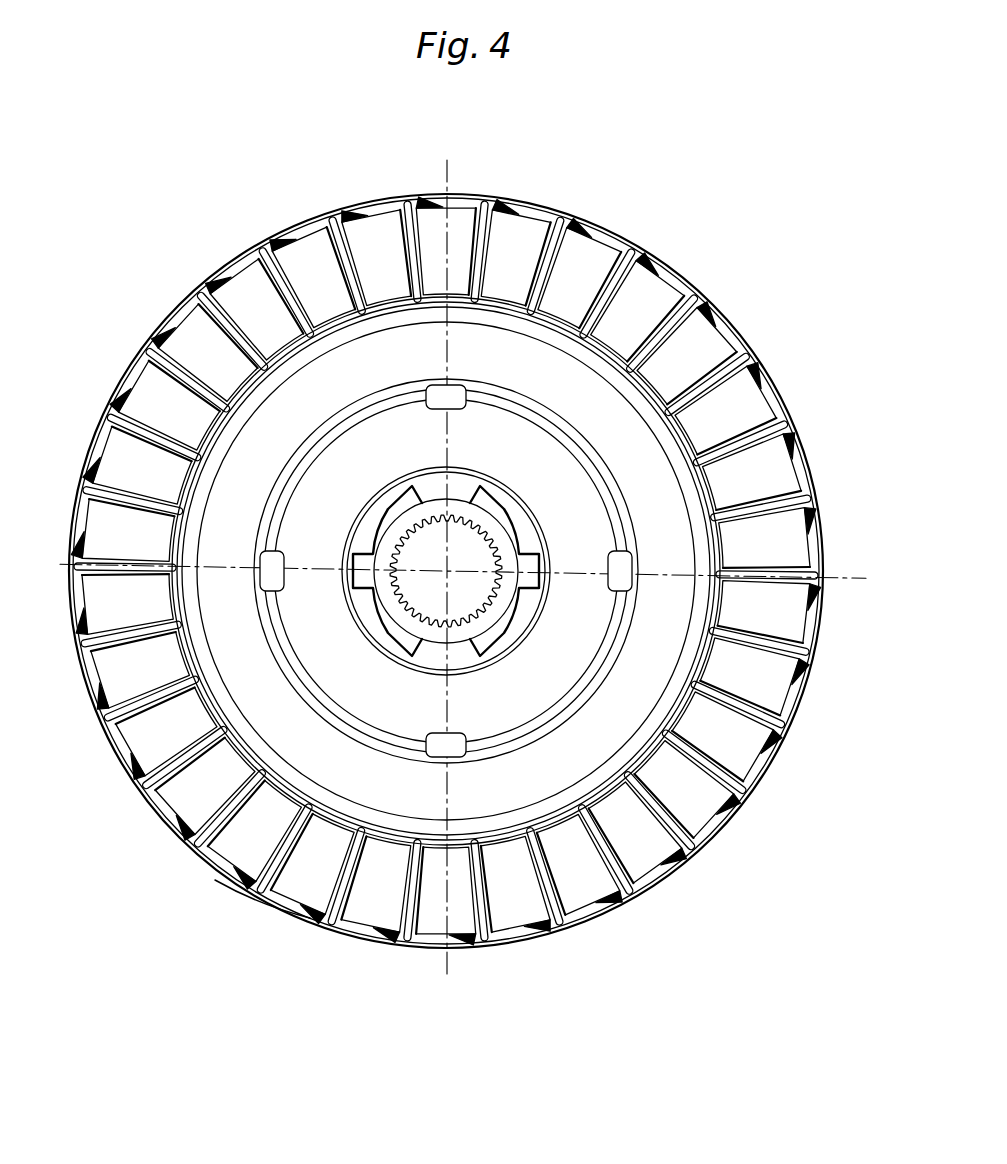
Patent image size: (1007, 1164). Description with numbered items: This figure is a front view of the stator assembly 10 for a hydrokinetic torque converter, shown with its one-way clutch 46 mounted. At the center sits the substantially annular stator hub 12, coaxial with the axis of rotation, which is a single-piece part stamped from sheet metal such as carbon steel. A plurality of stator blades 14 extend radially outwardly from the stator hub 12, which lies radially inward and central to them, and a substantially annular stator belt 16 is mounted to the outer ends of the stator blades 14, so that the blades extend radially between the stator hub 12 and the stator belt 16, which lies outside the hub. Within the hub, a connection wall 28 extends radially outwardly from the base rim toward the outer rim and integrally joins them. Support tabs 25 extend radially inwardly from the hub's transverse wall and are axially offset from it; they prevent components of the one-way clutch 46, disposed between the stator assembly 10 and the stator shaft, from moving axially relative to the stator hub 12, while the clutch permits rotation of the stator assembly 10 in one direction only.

The stator assembly 10 is at (645, 203).
The stator hub 12 is at (737, 327).
The stator blades 14 is at (152, 737).
The stator belt 16 is at (266, 907).
The support tabs 25 is at (522, 535).
The connection wall 28 is at (270, 433).
The one-way clutch 46 is at (540, 668).